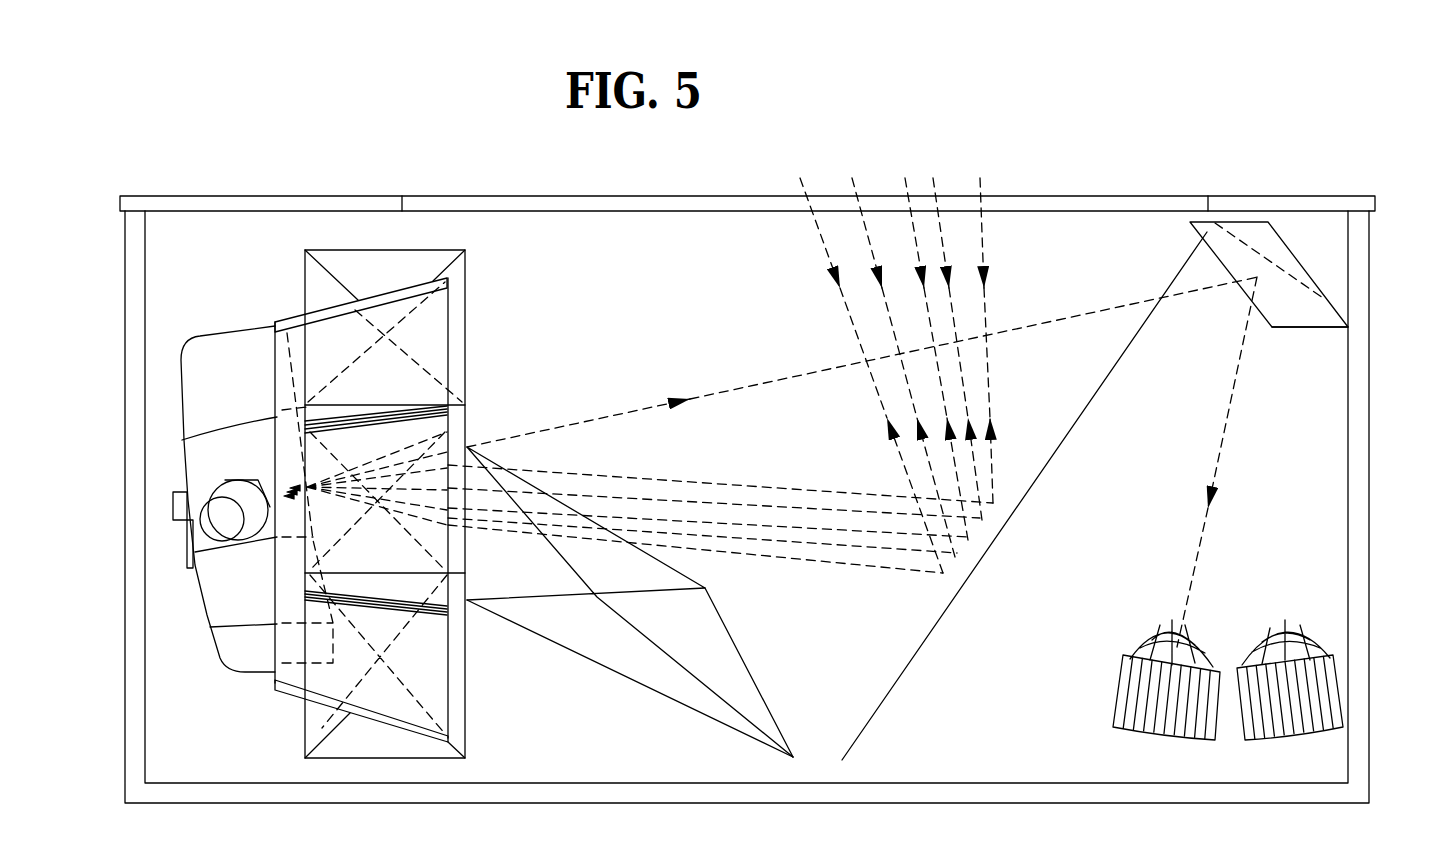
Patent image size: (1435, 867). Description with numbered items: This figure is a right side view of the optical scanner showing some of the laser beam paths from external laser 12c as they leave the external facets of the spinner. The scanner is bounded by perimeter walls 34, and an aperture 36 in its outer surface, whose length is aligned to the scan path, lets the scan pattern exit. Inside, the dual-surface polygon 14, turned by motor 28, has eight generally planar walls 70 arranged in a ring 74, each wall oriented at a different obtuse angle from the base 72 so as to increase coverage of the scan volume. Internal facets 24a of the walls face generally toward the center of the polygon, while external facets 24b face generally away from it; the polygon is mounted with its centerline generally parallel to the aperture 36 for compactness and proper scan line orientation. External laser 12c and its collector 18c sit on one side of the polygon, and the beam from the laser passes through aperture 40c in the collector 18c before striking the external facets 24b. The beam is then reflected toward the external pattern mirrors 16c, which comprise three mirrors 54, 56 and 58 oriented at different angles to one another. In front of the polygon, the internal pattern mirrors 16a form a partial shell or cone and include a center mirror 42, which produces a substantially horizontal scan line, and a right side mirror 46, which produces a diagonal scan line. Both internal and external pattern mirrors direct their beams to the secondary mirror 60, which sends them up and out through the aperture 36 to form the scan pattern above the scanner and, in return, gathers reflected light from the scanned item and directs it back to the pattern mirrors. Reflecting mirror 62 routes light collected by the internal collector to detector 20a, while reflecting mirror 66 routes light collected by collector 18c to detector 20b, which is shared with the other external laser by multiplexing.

The external laser 12c is at (210, 527).
The dual-surface polygon 14 is at (290, 697).
The internal pattern mirrors 16a is at (597, 667).
The external pattern mirrors 16c is at (303, 252).
The collector 18c is at (207, 650).
The detector 20a is at (1317, 692).
The detector 20b is at (1157, 730).
The internal facets 24a is at (437, 287).
The external facets 24b is at (280, 322).
The motor 28 is at (173, 505).
The perimeter walls 34 is at (130, 367).
The aperture 36 is at (478, 196).
The aperture 40c is at (225, 485).
The center mirror 42 is at (678, 703).
The right side mirror 46 is at (768, 702).
The mirror 54 is at (467, 267).
The mirror 56 is at (387, 437).
The mirror 58 is at (460, 728).
The secondary mirror 60 is at (925, 640).
The reflecting mirror 62 is at (1290, 273).
The reflecting mirror 66 is at (1313, 328).
The planar walls 70 is at (291, 312).
The base 72 is at (273, 397).
The ring 74 is at (326, 303).